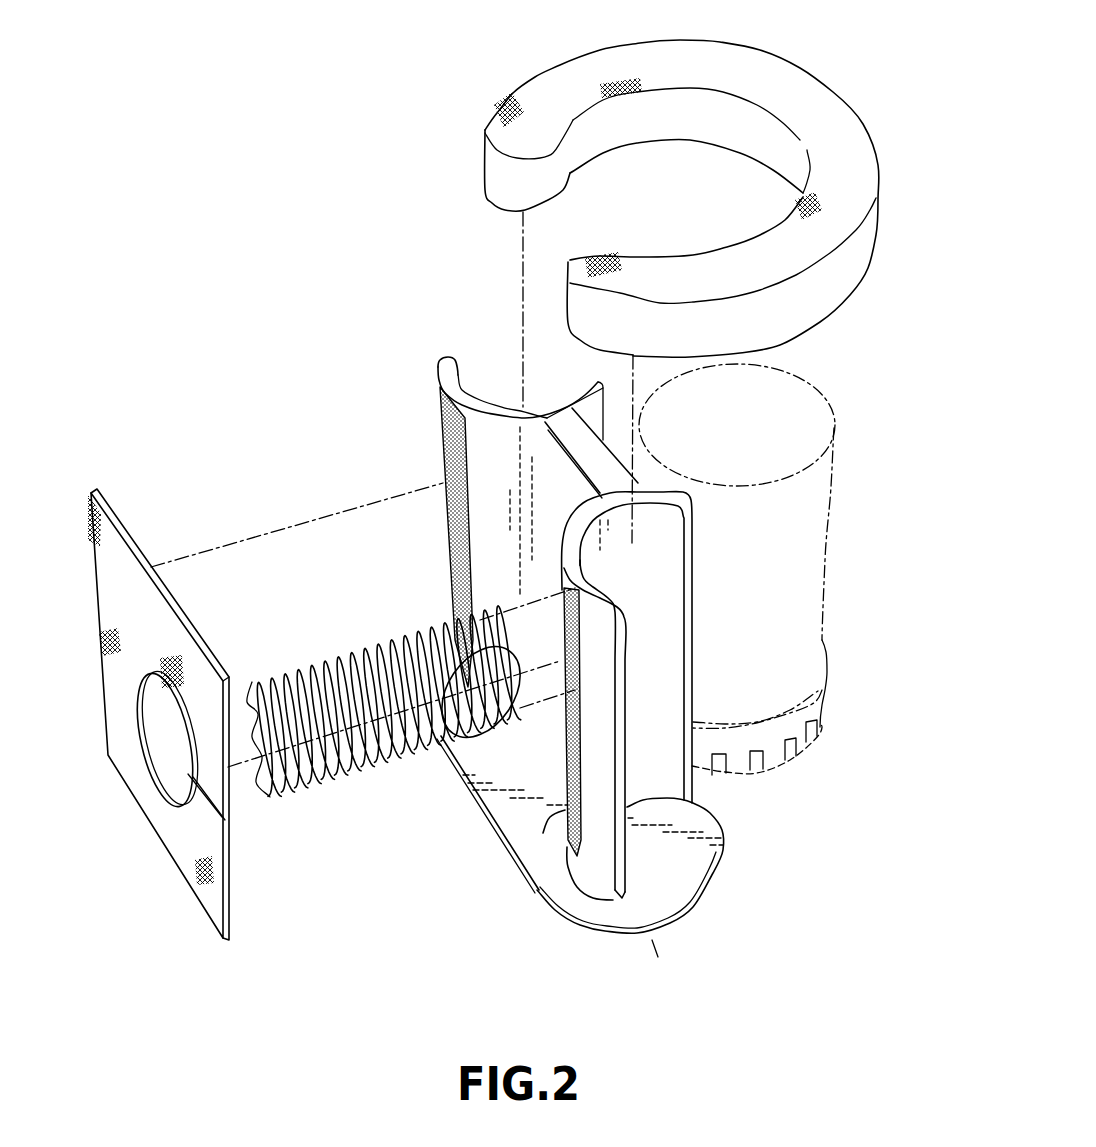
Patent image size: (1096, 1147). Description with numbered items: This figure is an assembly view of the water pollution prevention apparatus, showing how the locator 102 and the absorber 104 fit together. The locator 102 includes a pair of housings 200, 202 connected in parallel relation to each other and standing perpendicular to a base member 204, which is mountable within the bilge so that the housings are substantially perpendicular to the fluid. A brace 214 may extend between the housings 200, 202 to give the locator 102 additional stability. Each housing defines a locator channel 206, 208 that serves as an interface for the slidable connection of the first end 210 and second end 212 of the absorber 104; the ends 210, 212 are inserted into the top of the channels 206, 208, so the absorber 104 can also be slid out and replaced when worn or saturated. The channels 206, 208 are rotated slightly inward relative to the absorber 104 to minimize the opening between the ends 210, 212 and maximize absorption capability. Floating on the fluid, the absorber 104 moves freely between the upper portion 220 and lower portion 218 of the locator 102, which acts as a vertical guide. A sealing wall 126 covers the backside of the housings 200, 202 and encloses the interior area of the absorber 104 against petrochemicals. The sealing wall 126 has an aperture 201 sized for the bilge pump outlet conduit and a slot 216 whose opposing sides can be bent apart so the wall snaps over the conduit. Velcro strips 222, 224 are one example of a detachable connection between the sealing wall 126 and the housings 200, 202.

The locator 102 is at (415, 347).
The absorber 104 is at (658, 195).
The sealing wall 126 is at (149, 723).
The housing 200 is at (438, 385).
The aperture 201 is at (162, 773).
The housing 202 is at (595, 873).
The base member 204 is at (708, 903).
The locator channel 206 is at (473, 387).
The locator channel 208 is at (673, 763).
The first end 210 is at (492, 167).
The second end 212 is at (603, 250).
The brace 214 is at (620, 462).
The slot 216 is at (223, 822).
The lower portion 218 is at (630, 900).
The upper portion 220 is at (612, 735).
The Velcro strip 222 is at (560, 815).
The Velcro strip 224 is at (445, 522).